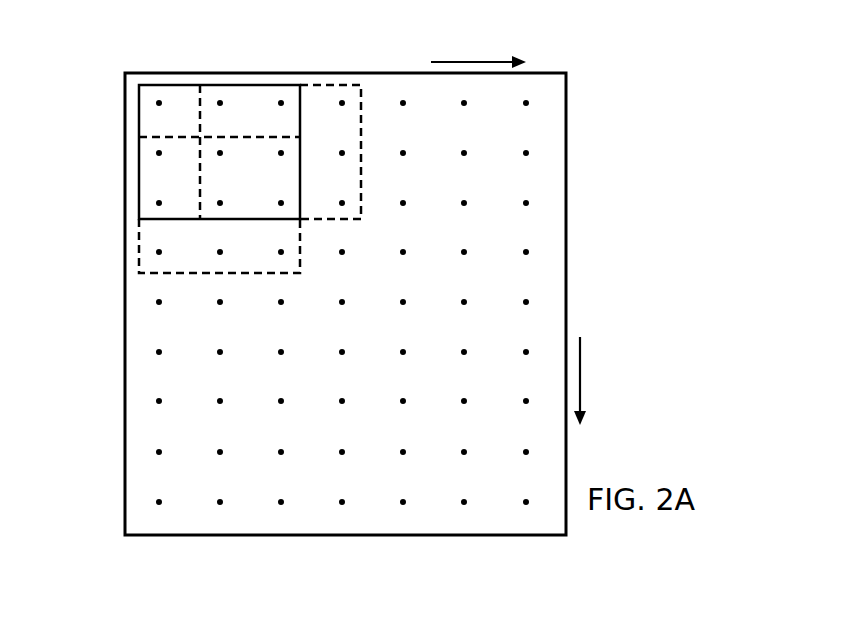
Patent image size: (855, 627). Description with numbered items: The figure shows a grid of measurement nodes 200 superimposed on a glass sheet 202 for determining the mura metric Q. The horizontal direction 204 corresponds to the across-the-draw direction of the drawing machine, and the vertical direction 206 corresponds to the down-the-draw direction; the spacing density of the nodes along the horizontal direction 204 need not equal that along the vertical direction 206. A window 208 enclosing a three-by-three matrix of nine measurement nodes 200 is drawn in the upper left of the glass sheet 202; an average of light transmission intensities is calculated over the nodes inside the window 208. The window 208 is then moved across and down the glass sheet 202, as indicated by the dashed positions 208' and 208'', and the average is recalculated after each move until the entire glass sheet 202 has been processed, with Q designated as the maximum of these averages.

The measurement nodes 200 is at (342, 347).
The glass sheet 202 is at (367, 527).
The horizontal direction 204 is at (478, 48).
The vertical direction 206 is at (601, 381).
The window 208 is at (219, 112).
The moved window position 208' is at (180, 205).
The moved window position 208'' is at (283, 118).